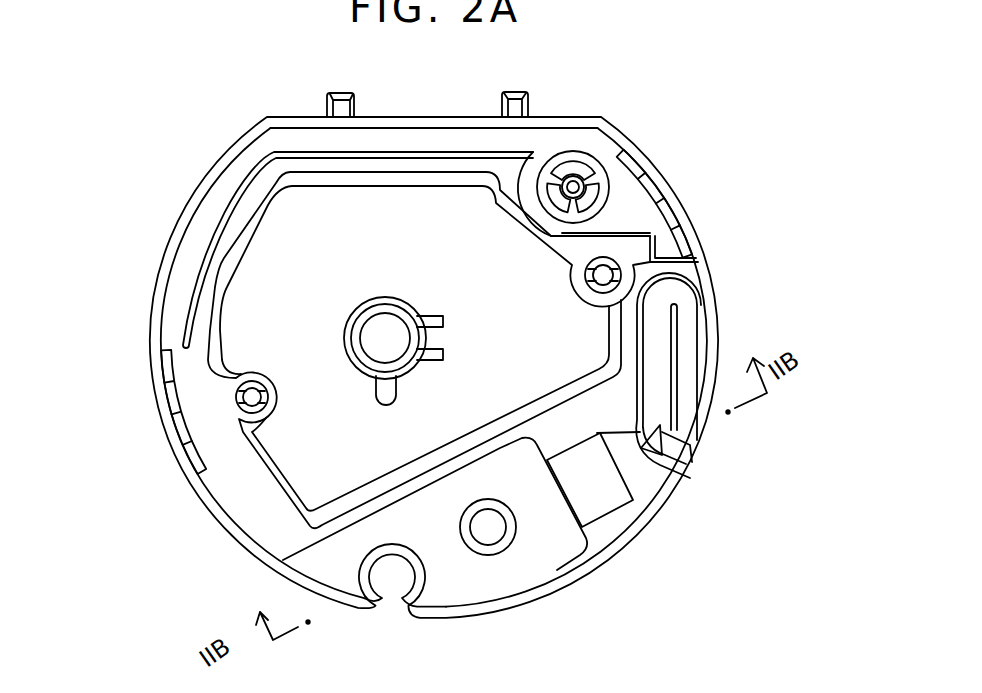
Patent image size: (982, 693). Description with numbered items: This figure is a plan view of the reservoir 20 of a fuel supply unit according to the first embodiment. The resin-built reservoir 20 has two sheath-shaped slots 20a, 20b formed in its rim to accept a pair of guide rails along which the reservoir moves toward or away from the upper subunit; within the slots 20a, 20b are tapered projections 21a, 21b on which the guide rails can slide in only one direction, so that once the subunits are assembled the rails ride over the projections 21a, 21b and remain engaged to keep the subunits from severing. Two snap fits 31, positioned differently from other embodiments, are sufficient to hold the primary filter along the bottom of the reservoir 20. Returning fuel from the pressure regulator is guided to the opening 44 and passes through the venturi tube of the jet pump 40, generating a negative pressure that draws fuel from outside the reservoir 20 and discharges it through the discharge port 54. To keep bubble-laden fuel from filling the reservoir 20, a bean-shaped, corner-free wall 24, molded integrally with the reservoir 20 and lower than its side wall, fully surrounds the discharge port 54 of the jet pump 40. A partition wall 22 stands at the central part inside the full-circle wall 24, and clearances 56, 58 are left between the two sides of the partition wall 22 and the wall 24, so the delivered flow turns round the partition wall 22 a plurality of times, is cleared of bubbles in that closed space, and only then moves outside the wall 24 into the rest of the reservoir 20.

The reservoir 20 is at (213, 518).
The sheath-shaped slot 20a is at (640, 160).
The sheath-shaped slot 20b is at (160, 367).
The tapered projection 21a is at (658, 192).
The tapered projection 21b is at (168, 412).
The partition wall 22 is at (680, 343).
The wall 24 is at (692, 262).
The snap fit 31 is at (236, 400).
The jet pump 40 is at (603, 517).
The opening 44 is at (493, 532).
The discharge port 54 is at (672, 437).
The clearance 56 is at (672, 400).
The clearance 58 is at (668, 290).